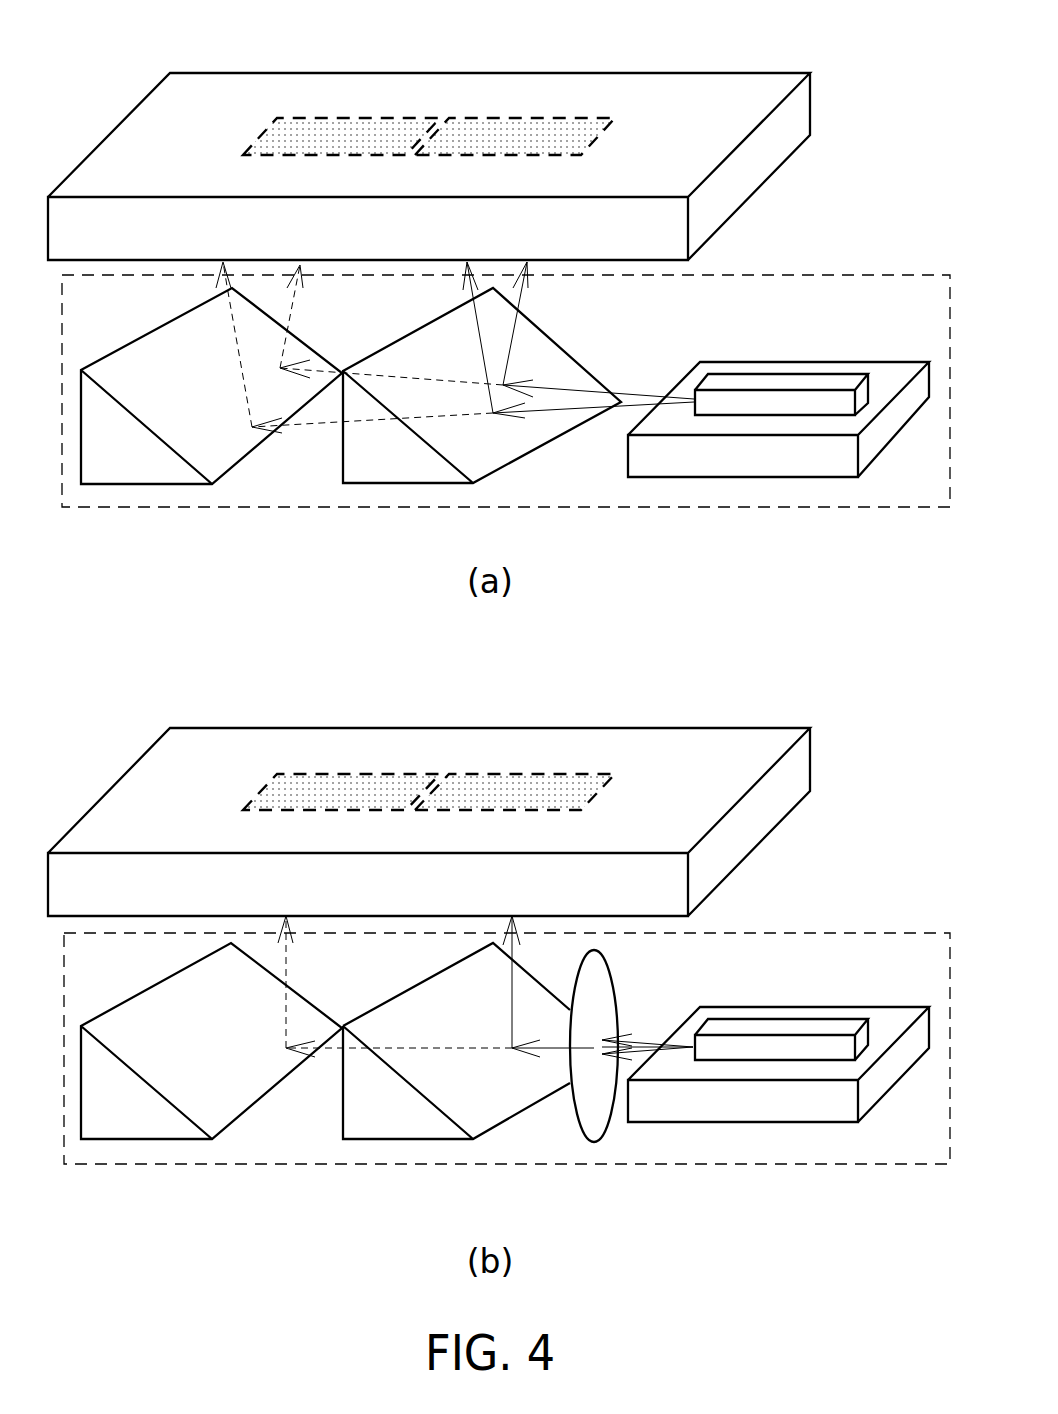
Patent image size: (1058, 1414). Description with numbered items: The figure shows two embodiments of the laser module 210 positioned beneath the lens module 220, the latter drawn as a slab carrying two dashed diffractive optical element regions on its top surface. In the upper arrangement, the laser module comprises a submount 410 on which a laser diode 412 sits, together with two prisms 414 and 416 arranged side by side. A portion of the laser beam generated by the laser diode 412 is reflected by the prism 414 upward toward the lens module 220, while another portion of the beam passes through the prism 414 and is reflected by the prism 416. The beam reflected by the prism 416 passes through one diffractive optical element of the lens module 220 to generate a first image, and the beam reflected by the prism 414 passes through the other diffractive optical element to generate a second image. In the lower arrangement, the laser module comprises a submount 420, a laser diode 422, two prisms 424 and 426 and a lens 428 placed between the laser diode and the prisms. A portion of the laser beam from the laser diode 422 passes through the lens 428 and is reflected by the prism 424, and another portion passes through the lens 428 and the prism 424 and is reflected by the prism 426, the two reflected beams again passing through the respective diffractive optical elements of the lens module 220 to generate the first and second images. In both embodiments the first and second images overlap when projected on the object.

The laser module 210 is at (878, 273).
The lens module 220 is at (742, 88).
The submount 410 is at (755, 468).
The laser diode 412 is at (795, 383).
The prism 414 is at (398, 475).
The prism 416 is at (127, 475).
The submount 420 is at (755, 1107).
The laser diode 422 is at (796, 1030).
The prism 424 is at (398, 1130).
The prism 426 is at (128, 1130).
The lens 428 is at (598, 1122).